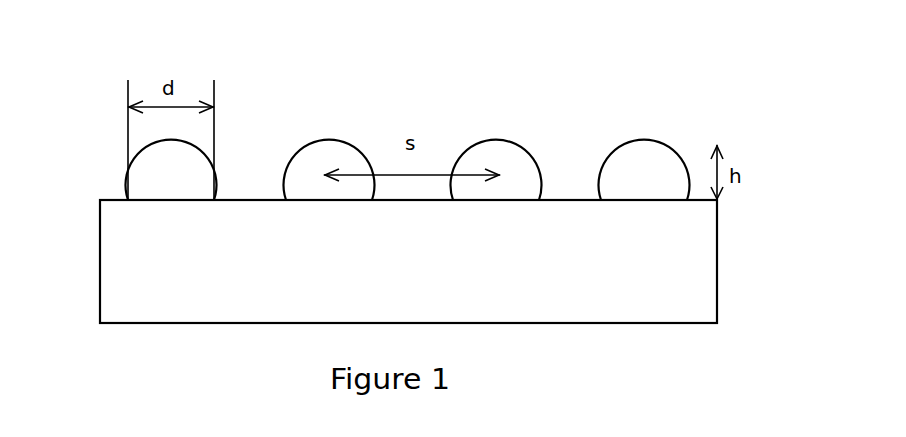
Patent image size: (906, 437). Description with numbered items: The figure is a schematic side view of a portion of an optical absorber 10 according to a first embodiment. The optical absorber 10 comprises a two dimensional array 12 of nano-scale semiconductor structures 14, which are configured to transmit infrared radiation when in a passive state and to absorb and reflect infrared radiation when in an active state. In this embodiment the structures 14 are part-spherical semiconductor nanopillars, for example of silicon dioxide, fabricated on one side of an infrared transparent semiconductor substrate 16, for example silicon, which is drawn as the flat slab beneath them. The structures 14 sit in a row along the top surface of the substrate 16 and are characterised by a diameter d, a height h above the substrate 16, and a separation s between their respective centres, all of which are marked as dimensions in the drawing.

The optical absorber 10 is at (108, 77).
The two dimensional array 12 is at (670, 137).
The nano-scale semiconductor structures 14 is at (333, 153).
The substrate 16 is at (683, 262).